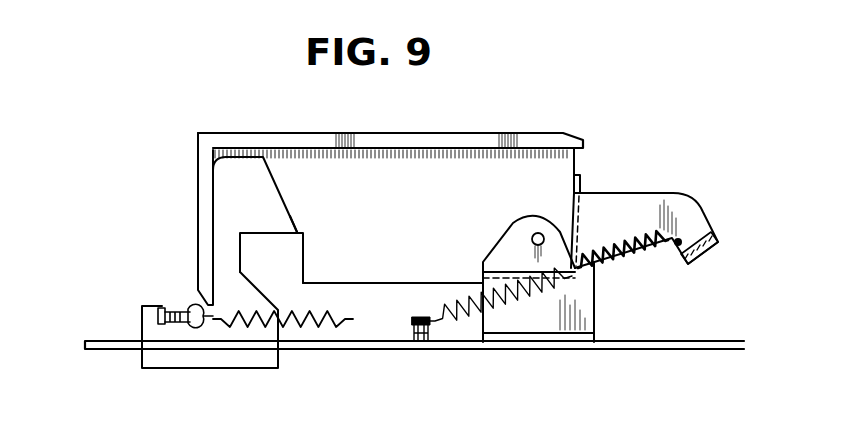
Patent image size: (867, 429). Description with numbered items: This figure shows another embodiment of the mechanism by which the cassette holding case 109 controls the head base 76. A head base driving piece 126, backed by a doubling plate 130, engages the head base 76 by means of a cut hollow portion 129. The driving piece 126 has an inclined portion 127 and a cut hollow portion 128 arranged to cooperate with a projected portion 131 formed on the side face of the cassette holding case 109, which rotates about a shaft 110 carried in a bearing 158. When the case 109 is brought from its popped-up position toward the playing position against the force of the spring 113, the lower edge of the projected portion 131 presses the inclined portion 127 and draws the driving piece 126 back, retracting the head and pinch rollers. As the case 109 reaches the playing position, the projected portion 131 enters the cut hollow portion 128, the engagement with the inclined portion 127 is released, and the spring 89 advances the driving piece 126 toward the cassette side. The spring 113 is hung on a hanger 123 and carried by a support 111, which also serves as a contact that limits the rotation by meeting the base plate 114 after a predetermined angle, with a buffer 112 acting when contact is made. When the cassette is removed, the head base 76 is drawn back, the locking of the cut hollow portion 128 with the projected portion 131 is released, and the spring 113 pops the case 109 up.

The cassette holding case 109 is at (398, 112).
The head base driving piece 126 is at (218, 187).
The inclined portion 127 is at (274, 181).
The cut hollow portion 128 is at (283, 232).
The projected portion 131 is at (303, 252).
The head base 76 is at (170, 307).
The cut hollow portion 129 is at (178, 324).
The doubling plate 130 is at (230, 368).
The spring 89 is at (328, 318).
The hanger 123 is at (420, 341).
The bearing 158 is at (502, 242).
The shaft 110 is at (538, 233).
The support 111 is at (614, 200).
The buffer 112 is at (691, 267).
The spring 113 is at (622, 276).
The base plate 114 is at (639, 349).